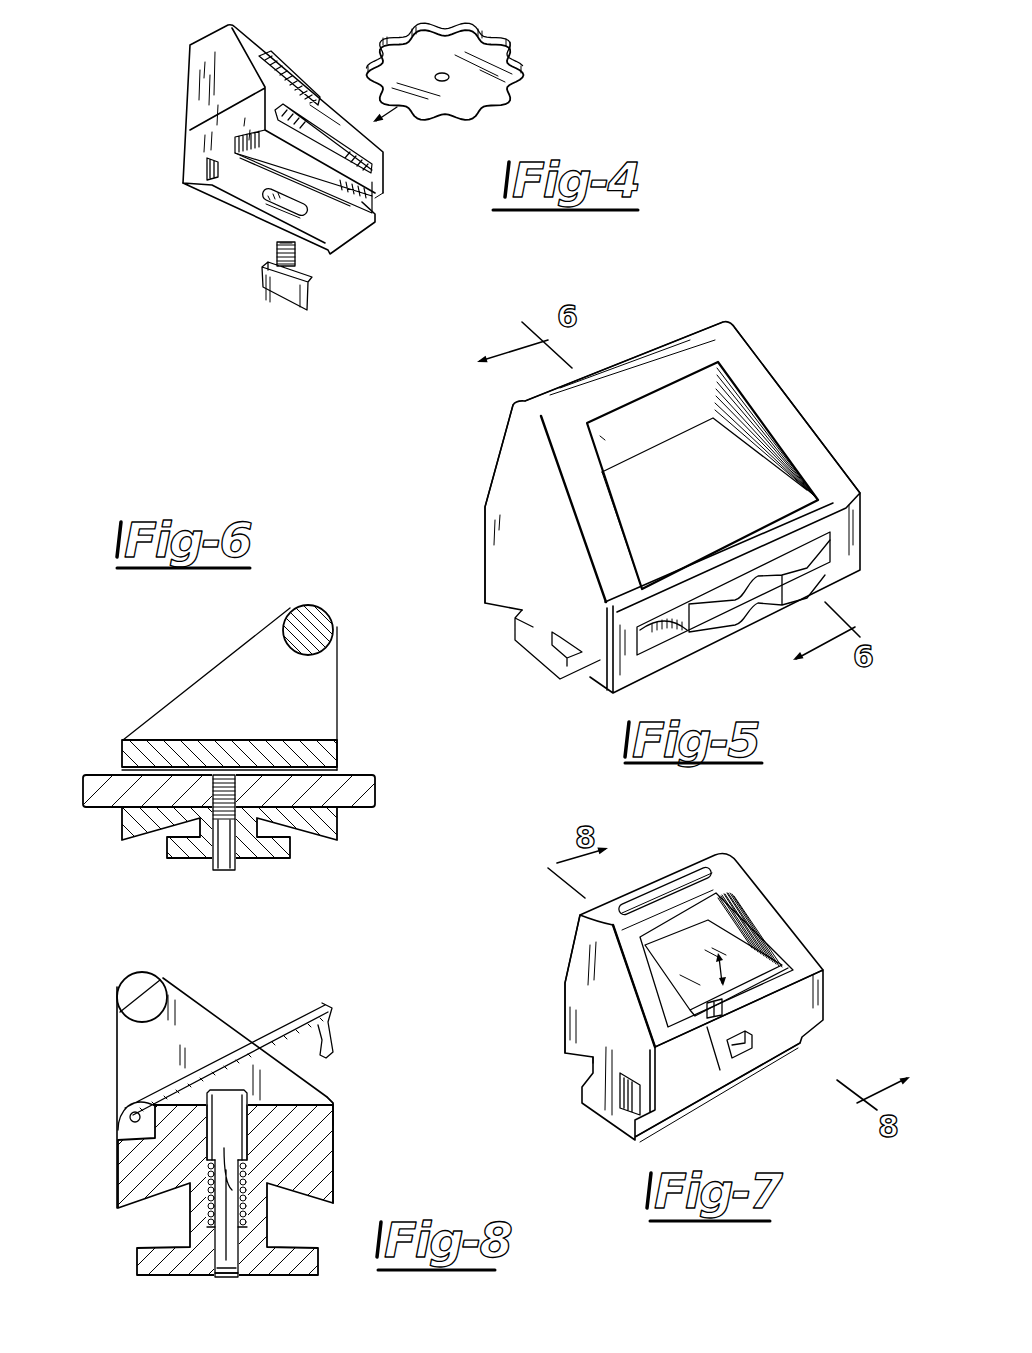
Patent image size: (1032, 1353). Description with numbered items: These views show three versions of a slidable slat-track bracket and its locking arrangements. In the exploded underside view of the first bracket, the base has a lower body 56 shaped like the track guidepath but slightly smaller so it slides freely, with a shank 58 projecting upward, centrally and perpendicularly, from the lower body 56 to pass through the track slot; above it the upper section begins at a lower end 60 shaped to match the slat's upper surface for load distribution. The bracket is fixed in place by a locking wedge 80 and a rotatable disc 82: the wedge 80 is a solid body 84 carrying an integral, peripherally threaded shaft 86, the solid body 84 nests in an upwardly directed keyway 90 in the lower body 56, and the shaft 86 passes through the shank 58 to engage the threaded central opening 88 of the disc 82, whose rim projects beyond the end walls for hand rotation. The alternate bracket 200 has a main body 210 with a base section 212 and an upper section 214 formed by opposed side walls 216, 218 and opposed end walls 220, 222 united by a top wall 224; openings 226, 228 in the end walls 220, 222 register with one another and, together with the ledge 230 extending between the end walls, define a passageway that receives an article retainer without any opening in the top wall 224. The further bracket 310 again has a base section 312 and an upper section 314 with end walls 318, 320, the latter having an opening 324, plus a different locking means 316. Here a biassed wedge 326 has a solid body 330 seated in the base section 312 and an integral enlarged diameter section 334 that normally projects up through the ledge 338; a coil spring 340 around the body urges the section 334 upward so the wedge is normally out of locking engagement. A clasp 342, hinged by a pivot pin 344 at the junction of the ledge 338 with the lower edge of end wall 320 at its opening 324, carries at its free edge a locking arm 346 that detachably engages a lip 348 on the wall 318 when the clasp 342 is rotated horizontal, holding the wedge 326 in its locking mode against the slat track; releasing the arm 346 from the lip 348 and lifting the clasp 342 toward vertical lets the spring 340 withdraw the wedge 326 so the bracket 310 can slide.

In FIG. 4, the lower body 56 is at (377, 220).
In FIG. 4, the shank 58 is at (228, 153).
In FIG. 4, the lower end 60 is at (200, 188).
In FIG. 4, the locking wedge 80 is at (320, 295).
In FIG. 4, the rotatable disc 82 is at (512, 50).
In FIG. 4, the solid body 84 is at (273, 292).
In FIG. 4, the shaft 86 is at (273, 247).
In FIG. 4, the central opening 88 is at (446, 82).
In FIG. 4, the keyway 90 is at (330, 243).
In FIG. 5, the alternate embodiment bracket 200 is at (796, 382).
In FIG. 5, the main body of the bracket 210 is at (835, 470).
In FIG. 5, the base section 212 is at (538, 658).
In FIG. 6, the base section 212 is at (252, 852).
In FIG. 5, the upper section 214 is at (471, 476).
In FIG. 6, the upper section 214 is at (242, 635).
In FIG. 5, the side wall 216 is at (513, 500).
In FIG. 5, the side wall 218 is at (800, 428).
In FIG. 6, the end wall 220 is at (337, 682).
In FIG. 5, the end wall 222 is at (747, 358).
In FIG. 5, the top wall 224 is at (683, 340).
In FIG. 6, the top wall 224 is at (327, 608).
In FIG. 5, the opening 226 is at (677, 417).
In FIG. 5, the opening 228 is at (645, 410).
In FIG. 6, the opening 228 is at (307, 657).
In FIG. 5, the ledge 230 is at (700, 531).
In FIG. 6, the ledge 230 is at (167, 740).
In FIG. 7, the main body member 310 is at (748, 836).
In FIG. 7, the base section 312 is at (600, 1115).
In FIG. 7, the upper section 314 is at (573, 983).
In FIG. 7, the locking means 316 is at (721, 1072).
In FIG. 7, the end wall 318 is at (693, 1078).
In FIG. 8, the end wall 320 is at (117, 1022).
In FIG. 7, the opening 324 is at (743, 893).
In FIG. 8, the opening 324 is at (117, 1053).
In FIG. 8, the biassed wedge 326 is at (240, 1253).
In FIG. 8, the solid body 330 is at (227, 1275).
In FIG. 8, the enlarged diameter section 334 is at (270, 1180).
In FIG. 8, the ledge 338 is at (253, 1172).
In FIG. 8, the coil spring 340 is at (207, 1203).
In FIG. 7, the clasp 342 is at (793, 957).
In FIG. 8, the pivot pin 344 is at (132, 1117).
In FIG. 7, the locking arm 346 is at (750, 1000).
In FIG. 8, the locking arm 346 is at (322, 1058).
In FIG. 7, the lip 348 is at (748, 1047).
In FIG. 8, the lip 348 is at (333, 1125).